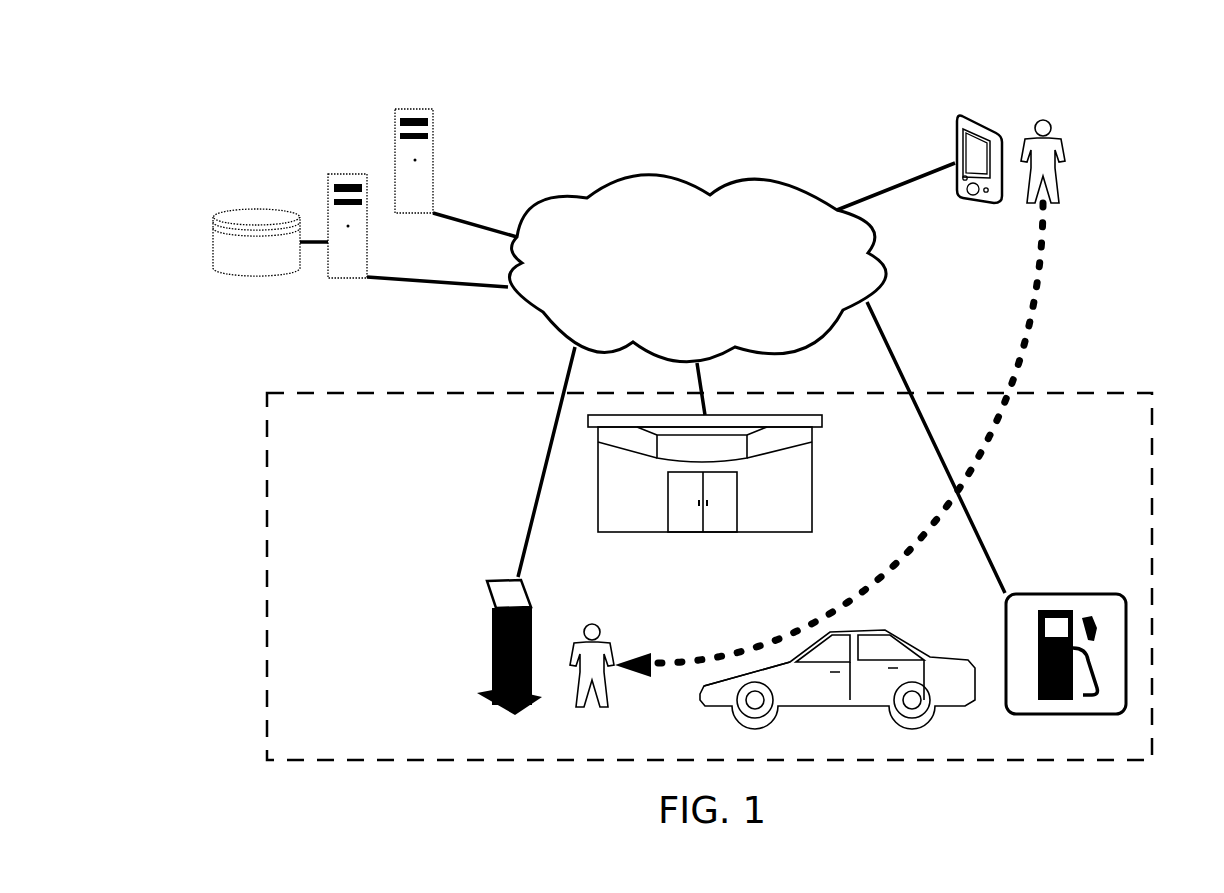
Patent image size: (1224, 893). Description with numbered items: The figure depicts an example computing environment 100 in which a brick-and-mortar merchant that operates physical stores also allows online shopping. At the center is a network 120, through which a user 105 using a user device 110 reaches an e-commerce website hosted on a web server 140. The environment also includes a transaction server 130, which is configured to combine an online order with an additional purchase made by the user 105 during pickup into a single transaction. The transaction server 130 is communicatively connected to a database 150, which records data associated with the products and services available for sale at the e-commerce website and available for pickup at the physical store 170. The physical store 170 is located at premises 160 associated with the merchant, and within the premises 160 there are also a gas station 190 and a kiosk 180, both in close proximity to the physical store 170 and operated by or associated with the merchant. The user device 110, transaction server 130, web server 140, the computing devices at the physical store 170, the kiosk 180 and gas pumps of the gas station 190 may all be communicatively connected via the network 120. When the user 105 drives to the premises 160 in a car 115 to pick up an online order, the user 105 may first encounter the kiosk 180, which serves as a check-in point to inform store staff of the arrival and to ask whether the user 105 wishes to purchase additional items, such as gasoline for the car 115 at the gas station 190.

The computing environment 100 is at (266, 60).
The user 105 is at (1050, 120).
The user device 110 is at (968, 113).
The car 115 is at (890, 628).
The network 120 is at (677, 173).
The transaction server 130 is at (348, 173).
The web server 140 is at (413, 108).
The database 150 is at (277, 208).
The premises 160 is at (1102, 392).
The physical store 170 is at (798, 415).
The kiosk 180 is at (498, 575).
The gas station 190 is at (1127, 593).